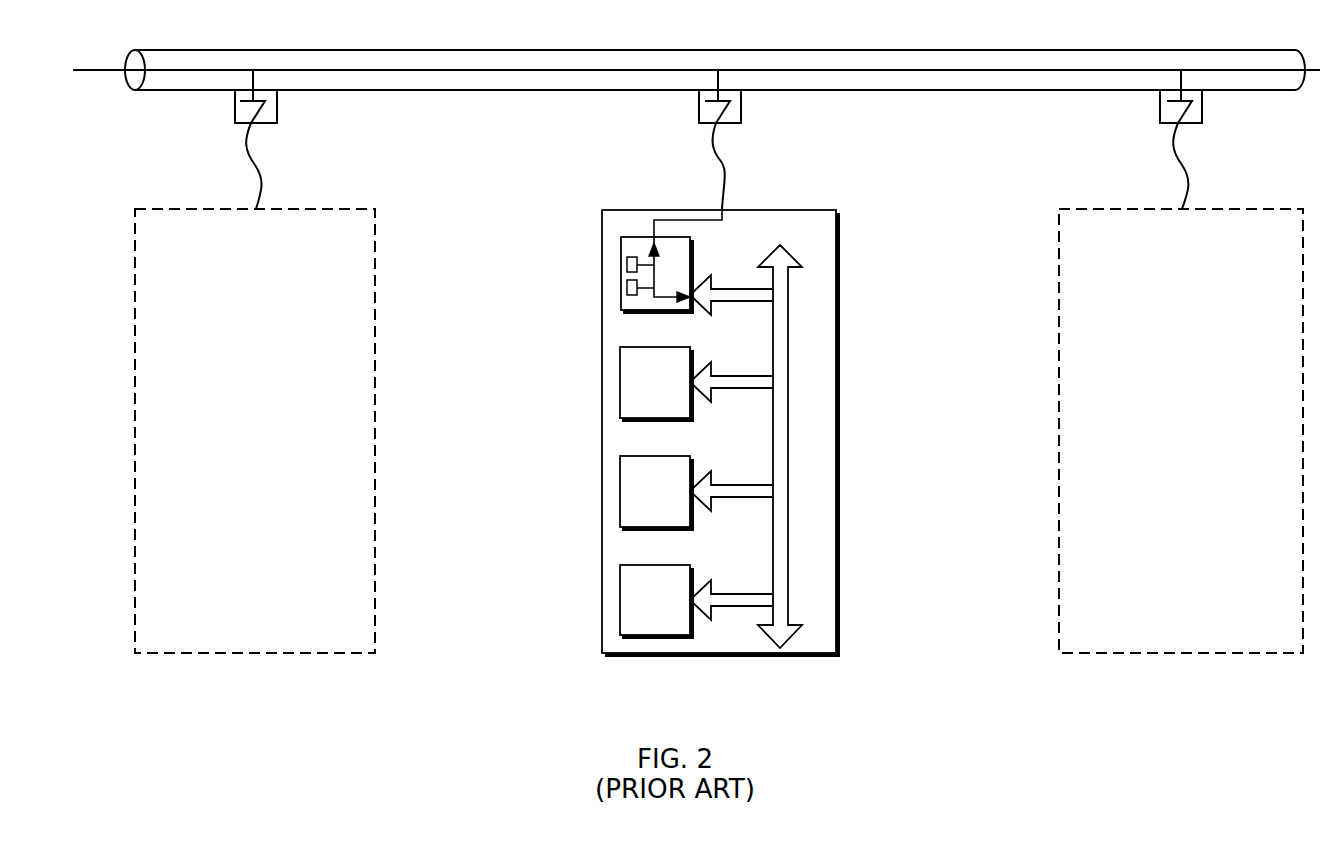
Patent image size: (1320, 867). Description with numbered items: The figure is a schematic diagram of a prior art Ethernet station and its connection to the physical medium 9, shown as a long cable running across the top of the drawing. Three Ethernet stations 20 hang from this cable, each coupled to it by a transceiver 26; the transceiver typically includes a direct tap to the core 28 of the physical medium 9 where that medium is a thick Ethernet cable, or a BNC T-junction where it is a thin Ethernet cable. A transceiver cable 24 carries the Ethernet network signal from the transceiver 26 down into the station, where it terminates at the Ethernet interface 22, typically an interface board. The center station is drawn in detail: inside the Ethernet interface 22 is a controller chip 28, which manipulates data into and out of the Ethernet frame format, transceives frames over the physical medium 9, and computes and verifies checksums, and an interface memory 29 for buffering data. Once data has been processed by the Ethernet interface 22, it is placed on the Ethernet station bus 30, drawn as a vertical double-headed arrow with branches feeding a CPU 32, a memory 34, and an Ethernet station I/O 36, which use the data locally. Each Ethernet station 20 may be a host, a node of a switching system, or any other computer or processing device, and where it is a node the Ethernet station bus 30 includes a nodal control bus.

The physical medium 9 is at (477, 50).
The Ethernet station 20 is at (719, 433).
The Ethernet interface 22 is at (621, 264).
The transceiver cable 24 is at (720, 162).
The transceiver 26 is at (700, 114).
The core / controller chip 28 is at (848, 71).
The interface memory 29 is at (628, 293).
The Ethernet station bus 30 is at (788, 343).
The CPU 32 is at (657, 383).
The memory 34 is at (657, 492).
The Ethernet station I/O 36 is at (657, 601).